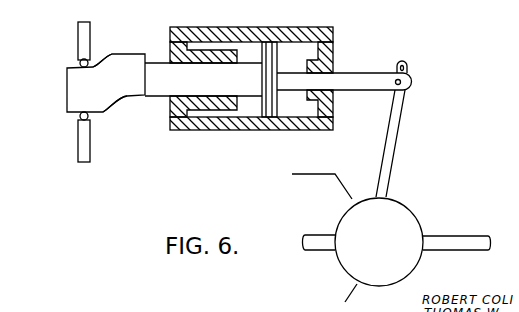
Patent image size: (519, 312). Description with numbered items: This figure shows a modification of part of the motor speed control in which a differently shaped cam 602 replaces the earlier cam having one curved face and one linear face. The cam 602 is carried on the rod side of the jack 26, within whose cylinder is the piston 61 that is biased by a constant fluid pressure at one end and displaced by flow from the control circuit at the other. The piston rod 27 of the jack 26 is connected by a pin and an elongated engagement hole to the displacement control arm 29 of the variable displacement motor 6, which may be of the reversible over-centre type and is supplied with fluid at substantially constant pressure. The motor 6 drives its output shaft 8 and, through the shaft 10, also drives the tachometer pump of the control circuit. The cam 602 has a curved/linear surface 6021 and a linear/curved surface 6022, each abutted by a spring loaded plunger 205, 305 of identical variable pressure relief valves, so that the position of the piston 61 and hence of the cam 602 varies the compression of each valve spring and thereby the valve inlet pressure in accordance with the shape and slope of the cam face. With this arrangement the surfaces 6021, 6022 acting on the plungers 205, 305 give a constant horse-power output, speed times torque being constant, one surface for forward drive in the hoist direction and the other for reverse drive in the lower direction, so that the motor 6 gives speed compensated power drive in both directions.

The cam 602 is at (110, 79).
The curved/linear surface 6021 is at (102, 61).
The linear/curved surface 6022 is at (127, 99).
The spring loaded plunger 205 is at (78, 38).
The spring loaded plunger 305 is at (78, 139).
The jack 26 is at (338, 44).
The piston 61 is at (271, 42).
The piston rod 27 is at (380, 78).
The displacement control arm 29 is at (390, 153).
The variable displacement motor 6 is at (412, 228).
The output shaft 8 is at (313, 243).
The shaft 10 is at (453, 242).